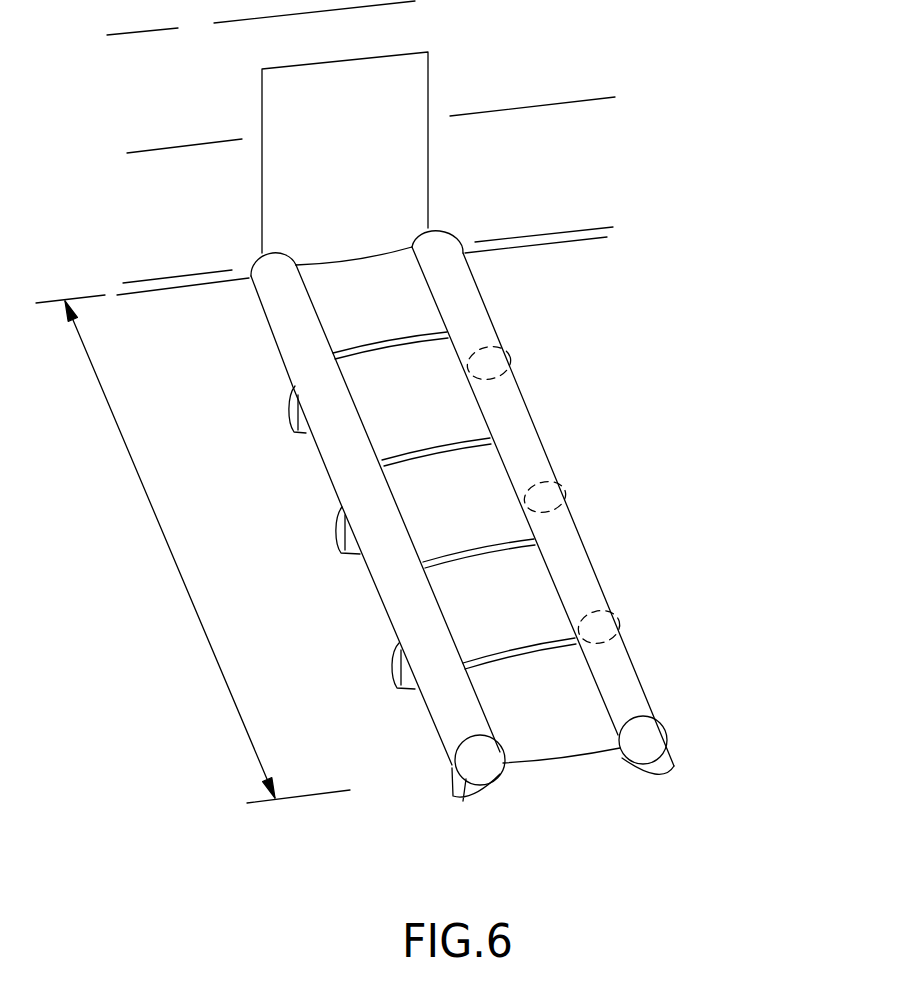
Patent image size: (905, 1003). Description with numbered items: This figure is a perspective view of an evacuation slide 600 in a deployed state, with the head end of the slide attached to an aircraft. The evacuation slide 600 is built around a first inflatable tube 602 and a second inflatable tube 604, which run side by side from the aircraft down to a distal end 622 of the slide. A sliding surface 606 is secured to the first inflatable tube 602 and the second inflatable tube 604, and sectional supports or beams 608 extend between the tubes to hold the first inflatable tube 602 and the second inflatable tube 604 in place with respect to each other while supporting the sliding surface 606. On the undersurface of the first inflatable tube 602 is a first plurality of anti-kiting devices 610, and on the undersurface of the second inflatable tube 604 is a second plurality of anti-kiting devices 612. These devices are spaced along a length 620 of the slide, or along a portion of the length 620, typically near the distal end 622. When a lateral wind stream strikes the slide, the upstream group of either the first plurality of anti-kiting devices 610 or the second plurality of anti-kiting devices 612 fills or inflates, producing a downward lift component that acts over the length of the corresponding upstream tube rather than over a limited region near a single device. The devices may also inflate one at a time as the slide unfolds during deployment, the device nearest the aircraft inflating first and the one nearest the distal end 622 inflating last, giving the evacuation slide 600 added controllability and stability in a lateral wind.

The evacuation slide 600 is at (602, 432).
The first inflatable tube 602 is at (277, 317).
The second inflatable tube 604 is at (480, 293).
The sliding surface 606 is at (373, 407).
The sectional supports or beams 608 is at (443, 575).
The first plurality of anti-kiting devices 610 is at (293, 408).
The second plurality of anti-kiting devices 612 is at (497, 355).
The length 620 is at (193, 549).
The distal end 622 is at (563, 758).